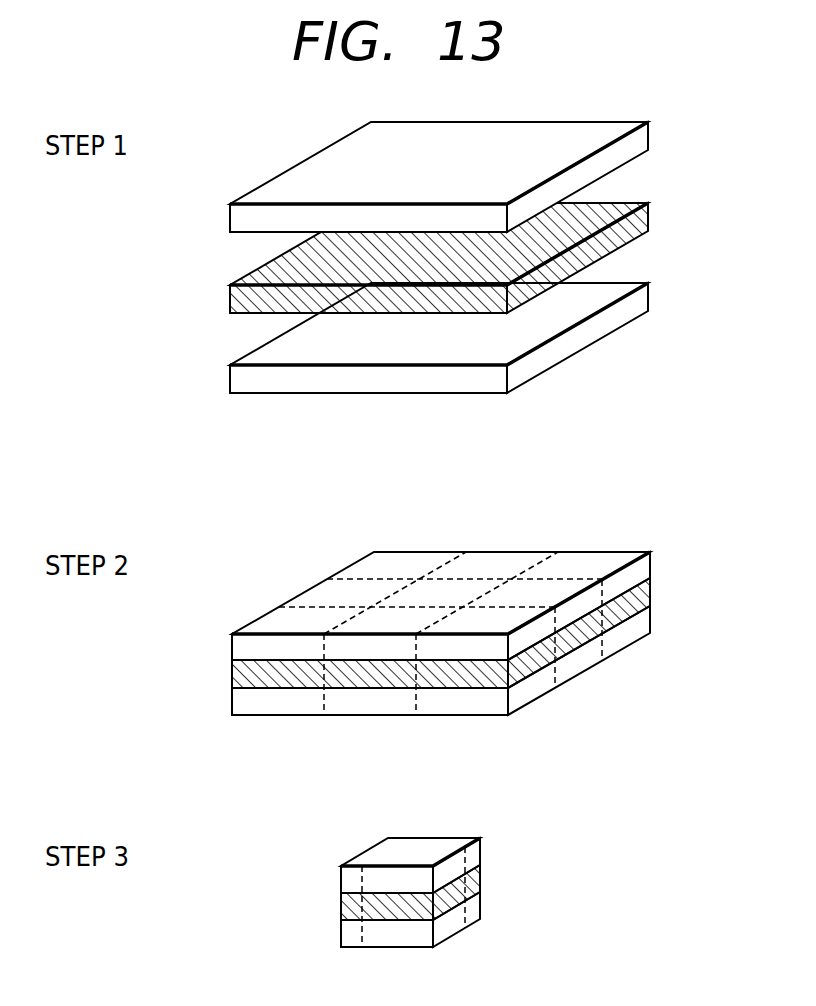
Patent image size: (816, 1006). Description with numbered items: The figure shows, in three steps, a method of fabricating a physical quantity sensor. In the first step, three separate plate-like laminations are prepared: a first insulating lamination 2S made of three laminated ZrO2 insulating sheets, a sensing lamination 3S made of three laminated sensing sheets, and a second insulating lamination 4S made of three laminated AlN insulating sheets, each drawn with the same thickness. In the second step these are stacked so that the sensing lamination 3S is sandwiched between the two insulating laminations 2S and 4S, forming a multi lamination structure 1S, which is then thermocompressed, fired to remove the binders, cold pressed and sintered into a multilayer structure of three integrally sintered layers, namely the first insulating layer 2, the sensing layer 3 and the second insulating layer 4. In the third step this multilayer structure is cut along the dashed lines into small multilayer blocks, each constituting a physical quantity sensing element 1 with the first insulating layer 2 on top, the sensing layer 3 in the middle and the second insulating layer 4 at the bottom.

The multi lamination structure 1S is at (648, 516).
The first insulating lamination 2S is at (645, 138).
The sensing lamination 3S is at (645, 218).
The second insulating lamination 4S is at (645, 300).
The physical quantity sensing element 1 is at (448, 859).
The first insulating layer 2 is at (422, 843).
The sensing layer 3 is at (480, 878).
The second insulating layer 4 is at (476, 906).